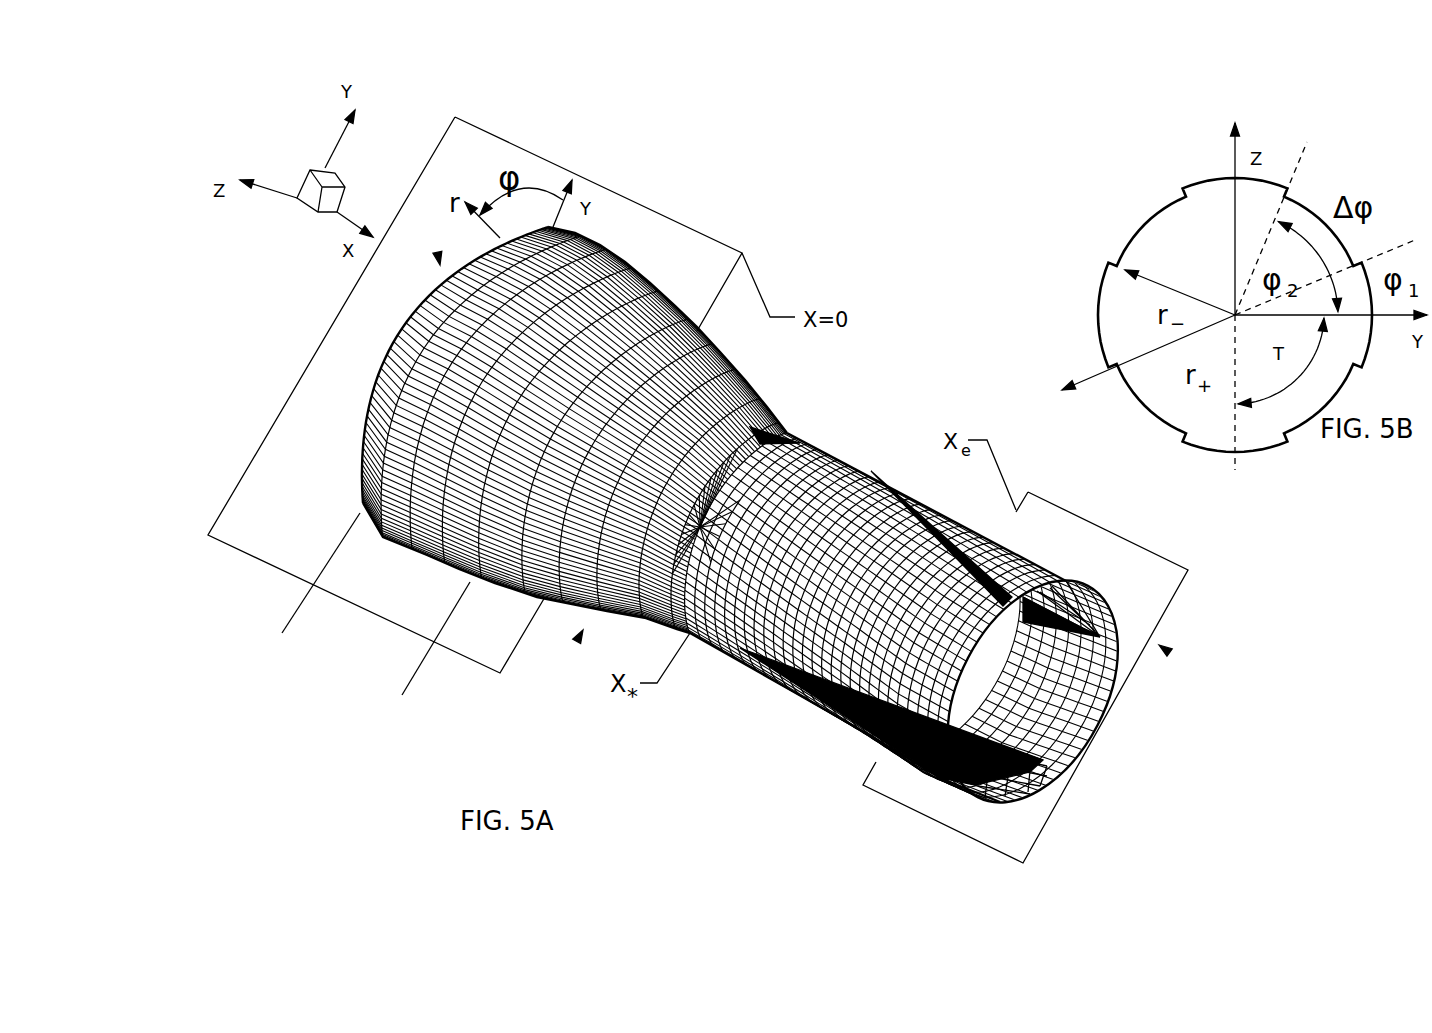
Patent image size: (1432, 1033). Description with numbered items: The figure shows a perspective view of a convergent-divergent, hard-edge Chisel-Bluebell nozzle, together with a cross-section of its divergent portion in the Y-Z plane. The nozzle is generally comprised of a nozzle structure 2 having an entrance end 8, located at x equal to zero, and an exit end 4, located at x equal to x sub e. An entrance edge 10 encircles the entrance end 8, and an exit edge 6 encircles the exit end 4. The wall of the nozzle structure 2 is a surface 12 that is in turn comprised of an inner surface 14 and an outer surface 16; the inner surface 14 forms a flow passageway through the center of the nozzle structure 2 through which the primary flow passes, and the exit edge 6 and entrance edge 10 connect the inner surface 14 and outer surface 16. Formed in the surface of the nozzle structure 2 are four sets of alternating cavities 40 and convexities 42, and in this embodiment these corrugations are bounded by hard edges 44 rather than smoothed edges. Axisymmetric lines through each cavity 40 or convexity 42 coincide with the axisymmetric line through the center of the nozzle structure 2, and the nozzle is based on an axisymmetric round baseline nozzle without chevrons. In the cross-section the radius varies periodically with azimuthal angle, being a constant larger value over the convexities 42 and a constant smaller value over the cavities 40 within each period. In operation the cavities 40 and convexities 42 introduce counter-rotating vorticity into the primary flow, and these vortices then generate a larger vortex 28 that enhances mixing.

The nozzle structure 2 is at (795, 552).
The exit end 4 is at (1067, 684).
The exit edge 6 is at (987, 807).
The entrance end 8 is at (440, 265).
The entrance edge 10 is at (282, 633).
The surface 12 is at (733, 378).
The inner surface 14 is at (1089, 698).
The outer surface 16 is at (402, 695).
The larger vortex 28 is at (1050, 790).
The cavities 40 is at (737, 655).
The convexities 42 is at (820, 707).
The hard edges 44 is at (1080, 585).